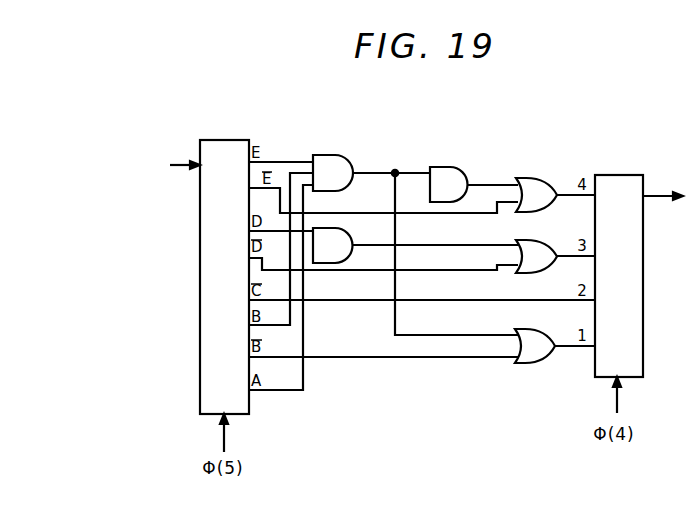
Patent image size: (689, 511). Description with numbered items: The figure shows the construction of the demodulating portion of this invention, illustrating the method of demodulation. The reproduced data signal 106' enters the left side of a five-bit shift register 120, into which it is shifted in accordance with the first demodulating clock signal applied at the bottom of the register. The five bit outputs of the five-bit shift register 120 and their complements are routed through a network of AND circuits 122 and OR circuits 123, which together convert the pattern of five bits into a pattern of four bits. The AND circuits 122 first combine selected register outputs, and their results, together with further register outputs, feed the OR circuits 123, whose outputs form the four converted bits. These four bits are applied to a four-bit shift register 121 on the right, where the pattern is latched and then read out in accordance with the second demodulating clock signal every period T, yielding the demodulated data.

The 5-bit shift register 120 is at (226, 140).
The 4-bit shift register 121 is at (620, 173).
The AND circuits 122 is at (337, 155).
The OR circuits 123 is at (533, 178).
The reproduced data signal 106' is at (158, 165).